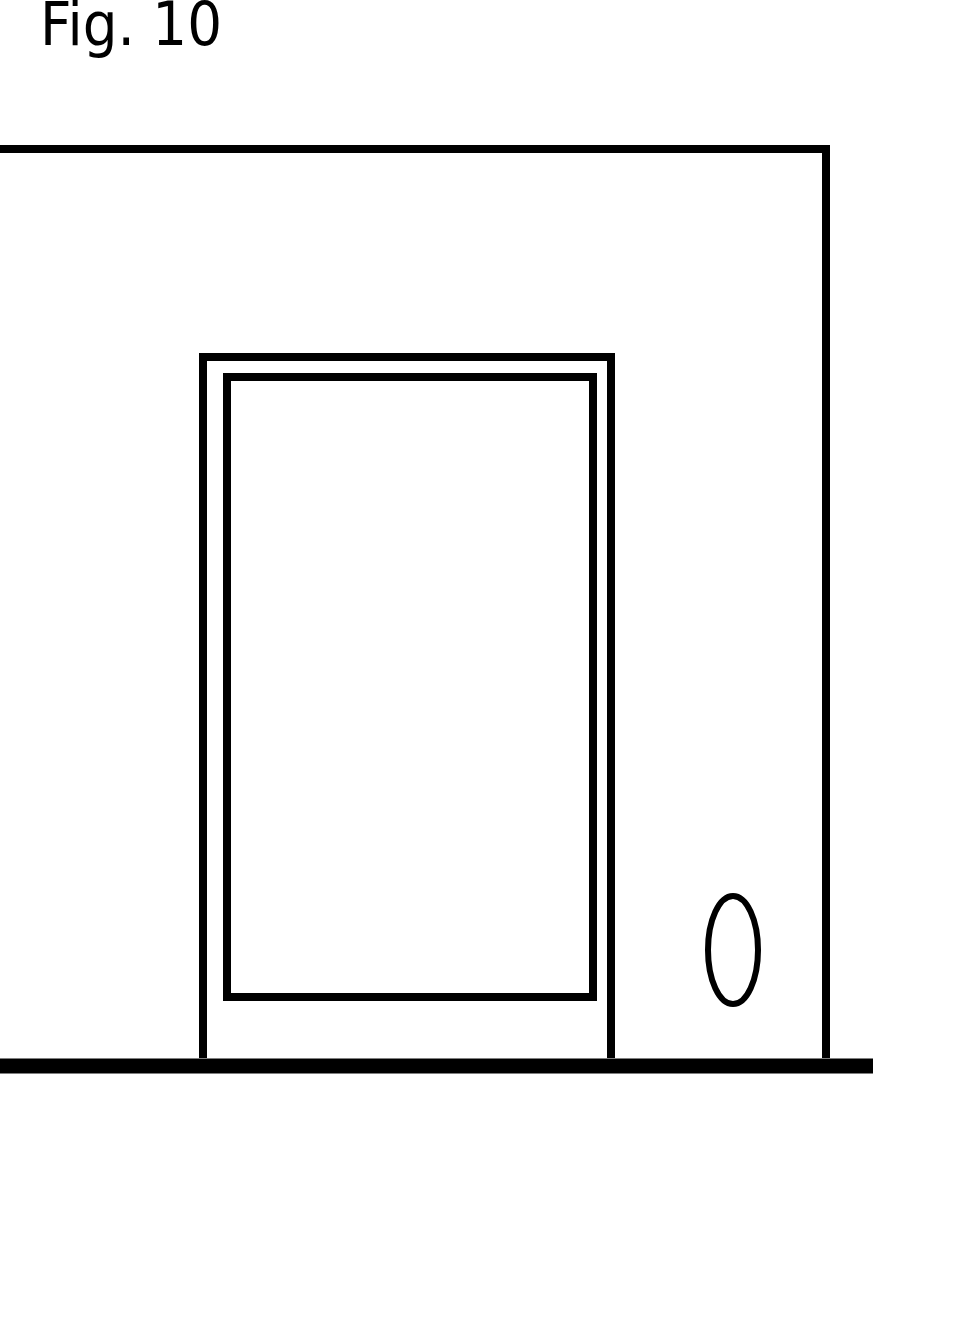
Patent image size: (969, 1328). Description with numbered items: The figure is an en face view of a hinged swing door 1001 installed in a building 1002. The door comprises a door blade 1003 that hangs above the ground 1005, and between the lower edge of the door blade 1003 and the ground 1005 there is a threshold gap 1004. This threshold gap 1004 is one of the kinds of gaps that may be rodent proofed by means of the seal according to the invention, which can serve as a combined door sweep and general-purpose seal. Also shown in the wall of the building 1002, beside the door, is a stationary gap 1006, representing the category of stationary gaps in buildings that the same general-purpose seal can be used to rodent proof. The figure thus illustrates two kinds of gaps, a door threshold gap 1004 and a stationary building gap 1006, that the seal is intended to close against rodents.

The hinged swing door 1001 is at (406, 353).
The building 1002 is at (677, 240).
The door blade 1003 is at (369, 852).
The threshold gap 1004 is at (519, 1035).
The ground 1005 is at (407, 1073).
The stationary gap 1006 is at (735, 975).